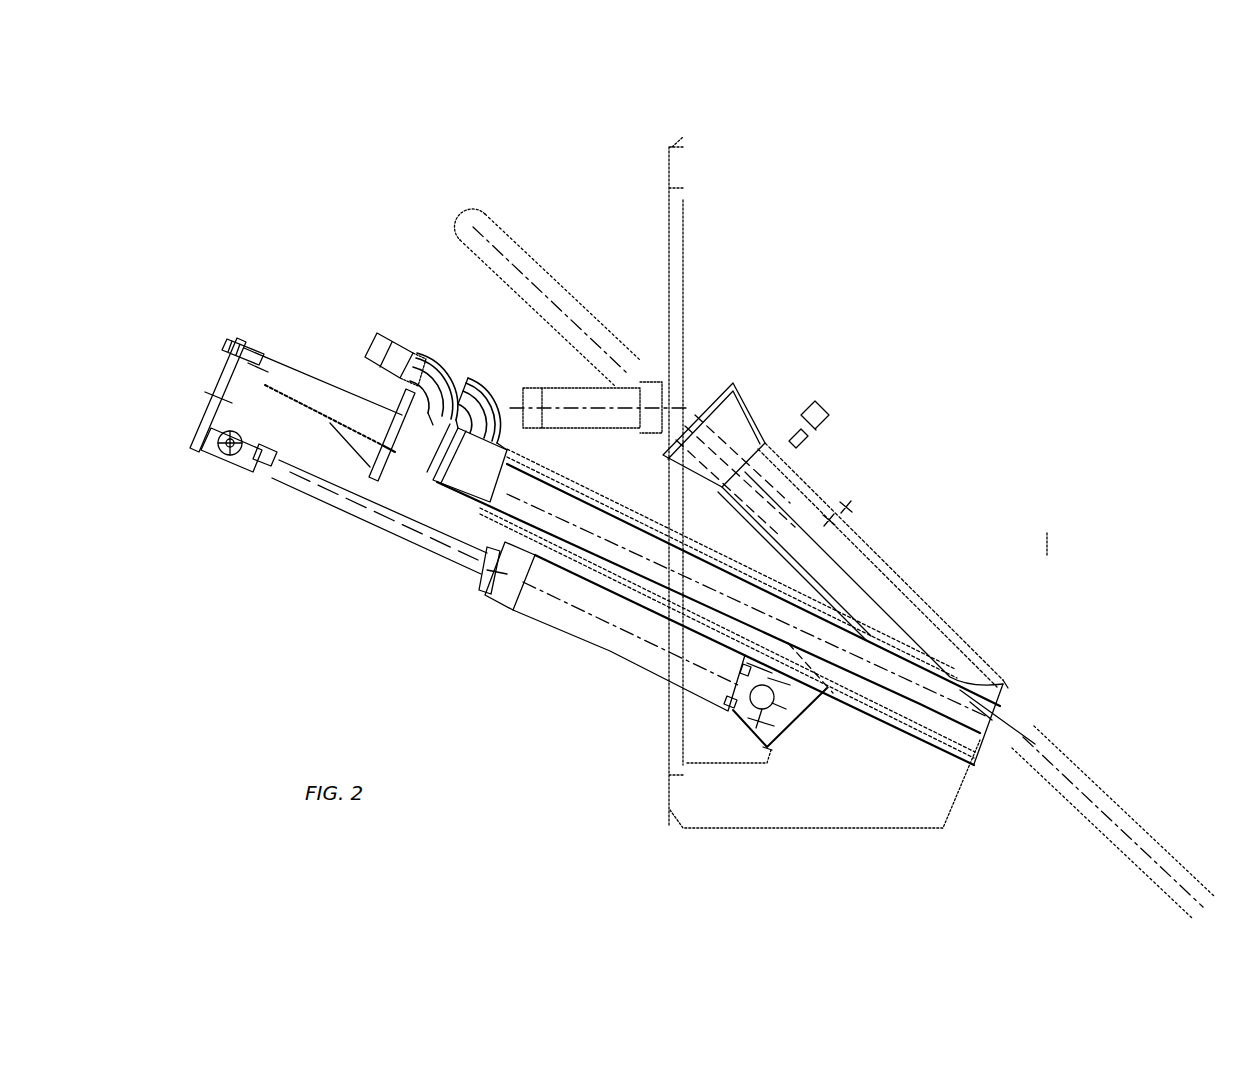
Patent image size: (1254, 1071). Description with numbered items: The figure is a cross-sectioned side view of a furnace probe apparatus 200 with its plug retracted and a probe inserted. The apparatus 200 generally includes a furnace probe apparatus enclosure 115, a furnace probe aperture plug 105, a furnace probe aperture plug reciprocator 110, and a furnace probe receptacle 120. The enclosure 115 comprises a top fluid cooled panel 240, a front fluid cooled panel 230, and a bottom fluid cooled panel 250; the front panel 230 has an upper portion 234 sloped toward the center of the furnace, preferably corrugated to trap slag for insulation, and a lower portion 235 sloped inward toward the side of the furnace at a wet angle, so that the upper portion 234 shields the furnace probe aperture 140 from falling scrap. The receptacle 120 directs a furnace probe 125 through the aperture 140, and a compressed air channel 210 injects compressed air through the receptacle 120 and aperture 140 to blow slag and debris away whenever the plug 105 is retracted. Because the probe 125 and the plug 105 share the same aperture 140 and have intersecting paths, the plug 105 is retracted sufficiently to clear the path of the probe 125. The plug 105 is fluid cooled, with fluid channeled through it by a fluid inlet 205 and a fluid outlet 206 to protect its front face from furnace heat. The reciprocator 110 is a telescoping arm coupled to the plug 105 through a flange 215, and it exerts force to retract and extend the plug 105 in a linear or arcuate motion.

The furnace probe apparatus 200 is at (1037, 96).
The top fluid cooled panel 240 is at (737, 137).
The bottom fluid cooled panel 250 is at (740, 832).
The fluid inlet 205 is at (367, 347).
The fluid outlet 206 is at (467, 370).
The furnace probe aperture plug 105 is at (465, 512).
The flange 215 is at (210, 372).
The furnace probe aperture plug reciprocator 110 is at (573, 653).
The furnace probe receptacle 120 is at (716, 380).
The compressed air channel 210 is at (804, 402).
The furnace probe aperture 140 is at (993, 756).
The furnace probe 125 is at (460, 227).
The upper portion 234 is at (906, 264).
The furnace probe apparatus enclosure 115 is at (943, 373).
The front fluid cooled panel 230 is at (1063, 531).
The lower portion 235 is at (1031, 636).